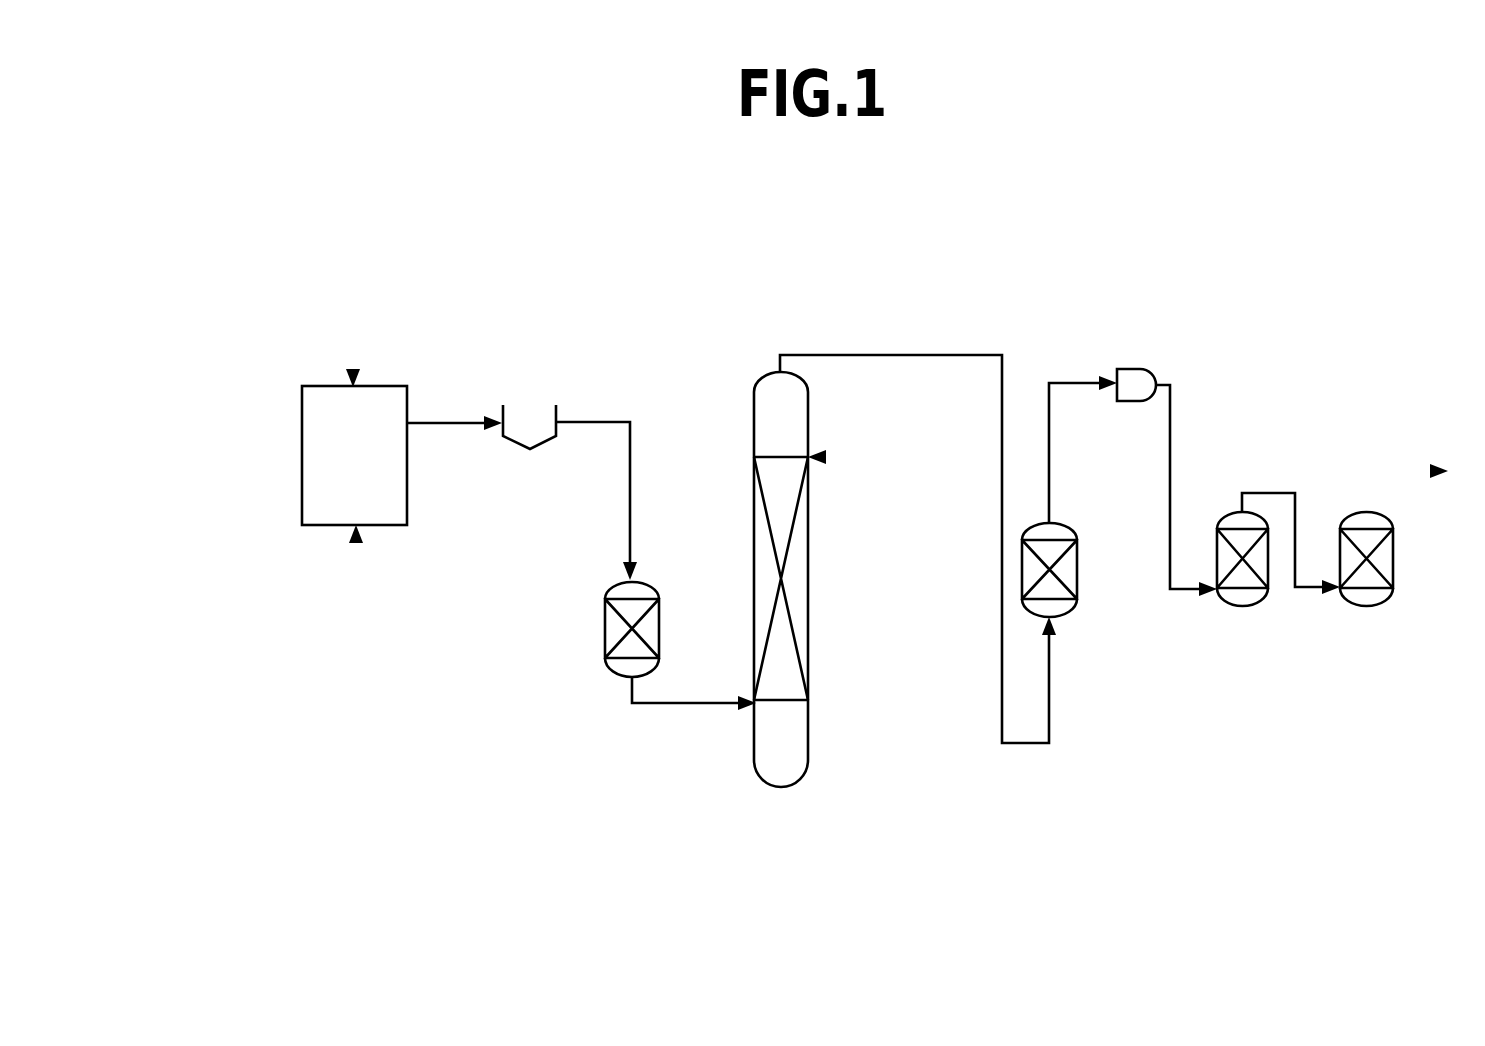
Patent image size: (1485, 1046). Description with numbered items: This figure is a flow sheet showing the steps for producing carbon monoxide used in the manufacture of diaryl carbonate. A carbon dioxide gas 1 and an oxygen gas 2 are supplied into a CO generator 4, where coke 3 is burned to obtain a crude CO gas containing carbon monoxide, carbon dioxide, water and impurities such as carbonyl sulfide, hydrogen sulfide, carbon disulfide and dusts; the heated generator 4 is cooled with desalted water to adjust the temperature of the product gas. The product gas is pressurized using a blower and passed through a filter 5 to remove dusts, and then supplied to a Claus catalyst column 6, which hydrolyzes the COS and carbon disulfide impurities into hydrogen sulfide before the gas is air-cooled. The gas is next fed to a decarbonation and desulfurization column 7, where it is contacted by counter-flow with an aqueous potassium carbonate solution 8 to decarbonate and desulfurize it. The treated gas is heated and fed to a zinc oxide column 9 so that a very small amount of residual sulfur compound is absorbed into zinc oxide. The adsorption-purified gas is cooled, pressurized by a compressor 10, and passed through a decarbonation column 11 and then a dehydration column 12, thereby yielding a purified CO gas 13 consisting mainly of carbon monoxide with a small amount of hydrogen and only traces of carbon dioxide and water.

The carbon dioxide gas 1 is at (356, 642).
The oxygen gas 2 is at (356, 542).
The coke 3 is at (353, 370).
The CO generator 4 is at (331, 455).
The filter 5 is at (522, 492).
The Claus catalyst column 6 is at (665, 646).
The decarbonation and desulfurization column 7 is at (901, 571).
The aqueous potassium carbonate solution 8 is at (824, 457).
The zinc oxide column 9 is at (1069, 517).
The compressor 10 is at (1156, 482).
The decarbonation column 11 is at (1278, 572).
The dehydration column 12 is at (1374, 582).
The purified CO gas 13 is at (1366, 512).